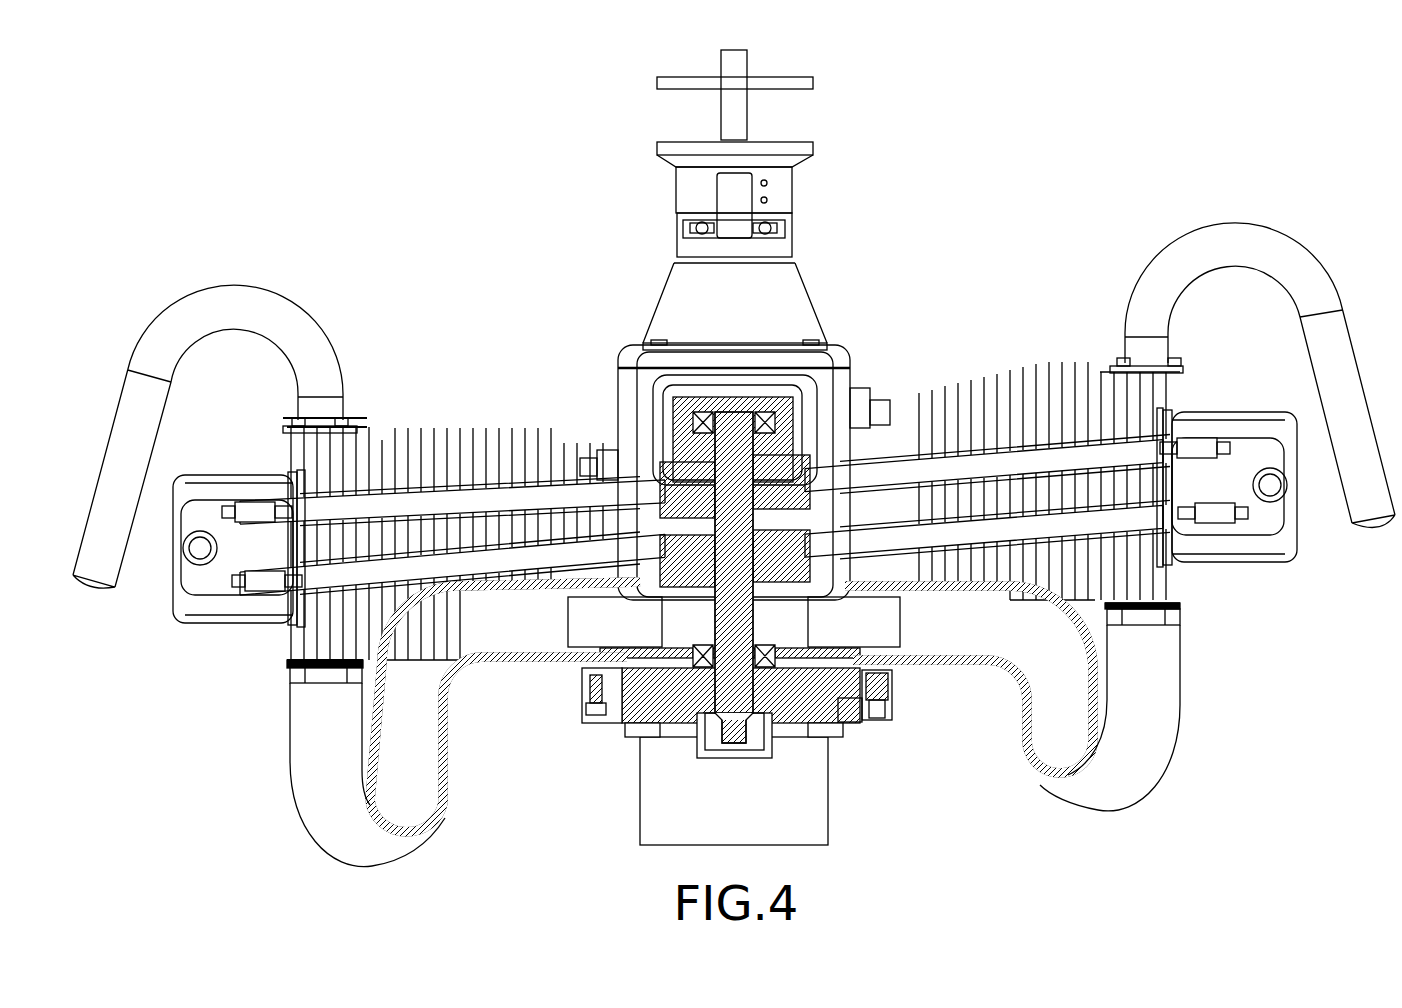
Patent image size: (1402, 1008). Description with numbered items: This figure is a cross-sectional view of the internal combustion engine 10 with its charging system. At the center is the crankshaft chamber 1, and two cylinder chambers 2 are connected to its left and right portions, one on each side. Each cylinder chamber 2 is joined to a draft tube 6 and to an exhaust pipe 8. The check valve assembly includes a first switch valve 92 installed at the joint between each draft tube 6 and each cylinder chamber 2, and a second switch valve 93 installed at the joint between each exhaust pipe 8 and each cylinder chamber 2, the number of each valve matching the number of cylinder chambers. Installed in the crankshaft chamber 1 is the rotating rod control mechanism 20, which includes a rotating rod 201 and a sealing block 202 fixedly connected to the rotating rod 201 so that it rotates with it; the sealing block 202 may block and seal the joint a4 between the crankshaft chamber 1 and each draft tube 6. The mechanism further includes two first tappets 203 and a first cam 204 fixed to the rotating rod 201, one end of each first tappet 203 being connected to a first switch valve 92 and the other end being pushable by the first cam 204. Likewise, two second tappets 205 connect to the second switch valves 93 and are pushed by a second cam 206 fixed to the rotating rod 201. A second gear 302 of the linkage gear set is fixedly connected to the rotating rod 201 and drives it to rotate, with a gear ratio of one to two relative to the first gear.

The internal combustion engine 10 is at (722, 31).
The crankshaft chamber 1 is at (848, 343).
The cylinder chamber 2 is at (492, 458).
The draft tube 6 is at (325, 808).
The exhaust pipe 8 is at (232, 295).
The rotating rod control mechanism 20 is at (700, 453).
The first switch valve 92 is at (265, 590).
The second switch valve 93 is at (255, 505).
The rotating rod 201 is at (778, 712).
The sealing block 202 is at (662, 650).
The first tappet 203 is at (358, 572).
The first cam 204 is at (862, 493).
The second tappet 205 is at (470, 503).
The second cam 206 is at (682, 468).
The second gear 302 is at (857, 710).
The joint between the crankshaft chamber and each draft tube a4 is at (653, 623).